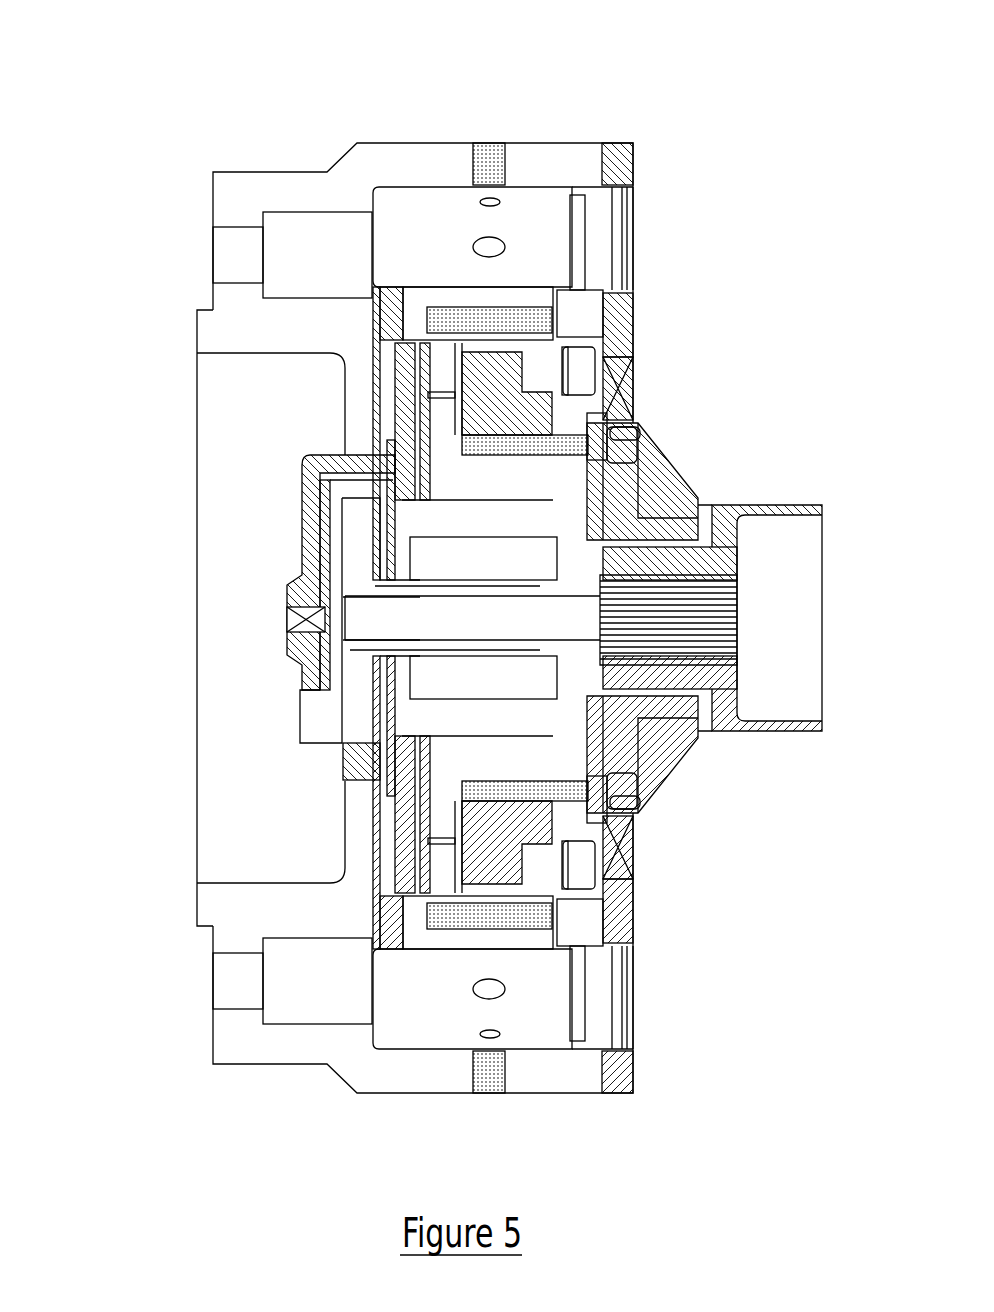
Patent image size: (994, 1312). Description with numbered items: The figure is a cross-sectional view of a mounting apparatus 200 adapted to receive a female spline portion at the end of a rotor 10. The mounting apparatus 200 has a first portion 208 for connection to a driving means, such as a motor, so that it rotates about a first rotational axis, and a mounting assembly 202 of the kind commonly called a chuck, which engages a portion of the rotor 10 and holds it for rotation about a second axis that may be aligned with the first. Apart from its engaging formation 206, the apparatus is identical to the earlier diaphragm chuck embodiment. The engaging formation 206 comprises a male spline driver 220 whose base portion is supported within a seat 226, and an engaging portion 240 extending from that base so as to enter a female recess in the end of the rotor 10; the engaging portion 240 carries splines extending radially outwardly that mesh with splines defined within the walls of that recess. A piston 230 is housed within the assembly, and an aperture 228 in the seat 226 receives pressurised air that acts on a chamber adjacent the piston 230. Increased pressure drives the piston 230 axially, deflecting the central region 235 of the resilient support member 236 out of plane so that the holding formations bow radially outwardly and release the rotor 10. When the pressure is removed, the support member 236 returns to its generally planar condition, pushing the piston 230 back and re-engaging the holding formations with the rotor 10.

The mounting apparatus 200 is at (677, 130).
The mounting assembly 202 is at (656, 470).
The engaging formation 206 is at (283, 722).
The first portion 208 is at (357, 143).
The rotor 10 is at (693, 500).
The male spline driver 220 is at (360, 700).
The seat 226 is at (293, 670).
The aperture 228 is at (287, 612).
The piston 230 is at (375, 440).
The central region 235 is at (655, 430).
The support member 236 is at (635, 290).
The engaging portion 240 is at (540, 650).